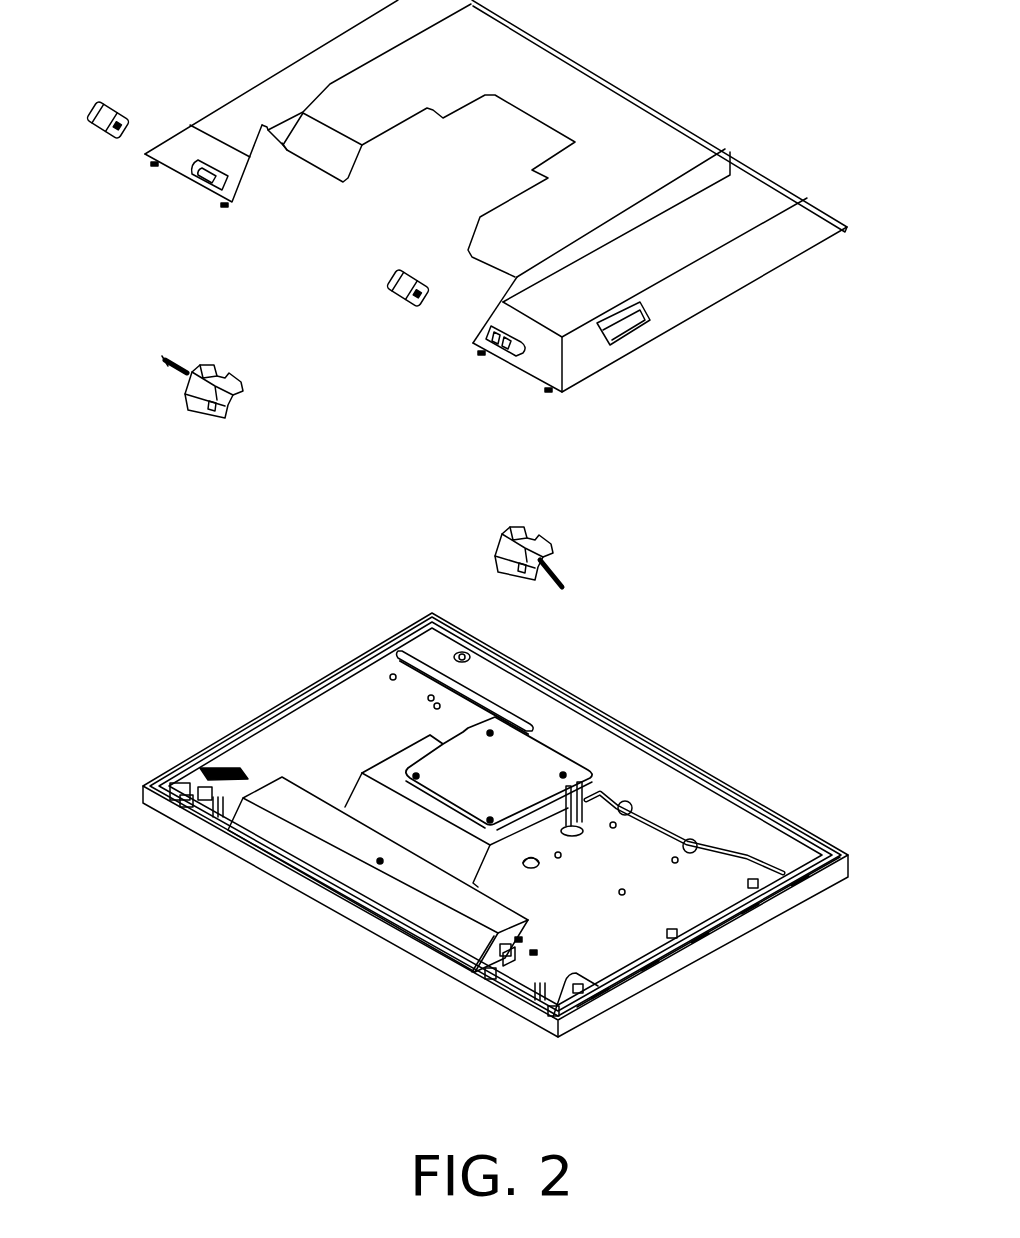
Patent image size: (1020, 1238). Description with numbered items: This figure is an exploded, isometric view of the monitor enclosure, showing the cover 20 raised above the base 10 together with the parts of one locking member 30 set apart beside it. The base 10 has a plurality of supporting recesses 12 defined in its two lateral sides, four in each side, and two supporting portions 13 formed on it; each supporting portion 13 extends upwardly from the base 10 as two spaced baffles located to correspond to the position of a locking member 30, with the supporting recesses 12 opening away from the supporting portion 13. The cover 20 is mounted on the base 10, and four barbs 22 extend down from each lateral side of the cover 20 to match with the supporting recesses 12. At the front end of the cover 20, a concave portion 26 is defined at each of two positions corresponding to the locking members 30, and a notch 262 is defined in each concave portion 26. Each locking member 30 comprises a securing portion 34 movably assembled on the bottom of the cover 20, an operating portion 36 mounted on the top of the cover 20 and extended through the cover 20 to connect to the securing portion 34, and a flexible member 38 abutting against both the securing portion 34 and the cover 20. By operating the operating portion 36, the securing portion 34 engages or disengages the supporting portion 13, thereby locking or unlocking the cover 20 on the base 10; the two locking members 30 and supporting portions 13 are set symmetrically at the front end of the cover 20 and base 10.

The base 10 is at (763, 915).
The supporting recesses 12 is at (602, 1000).
The supporting portions 13 is at (533, 953).
The cover 20 is at (762, 190).
The barbs 22 is at (595, 372).
The concave portion 26 is at (478, 345).
The notch 262 is at (508, 360).
The locking members 30 is at (144, 259).
The securing portion 34 is at (171, 389).
The operating portion 36 is at (117, 132).
The flexible member 38 is at (168, 358).